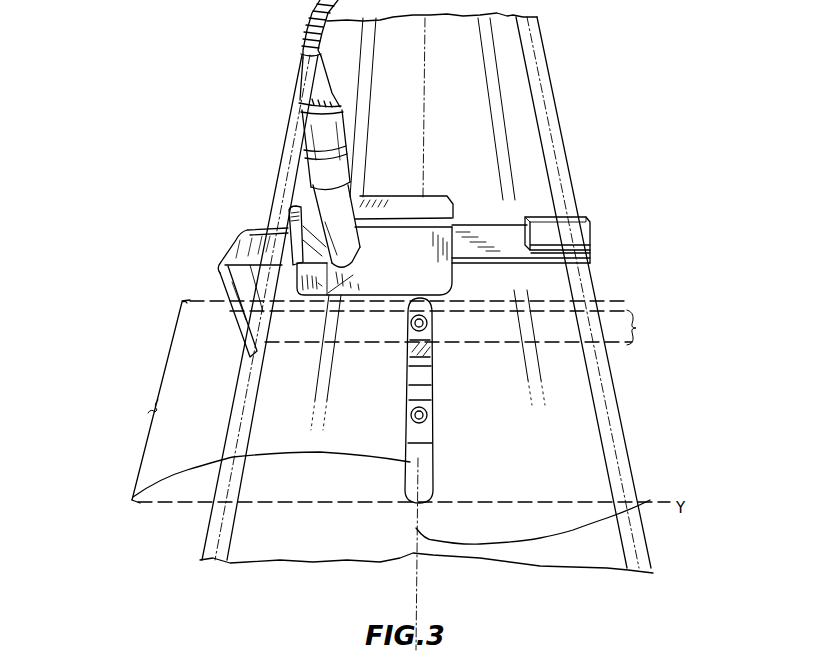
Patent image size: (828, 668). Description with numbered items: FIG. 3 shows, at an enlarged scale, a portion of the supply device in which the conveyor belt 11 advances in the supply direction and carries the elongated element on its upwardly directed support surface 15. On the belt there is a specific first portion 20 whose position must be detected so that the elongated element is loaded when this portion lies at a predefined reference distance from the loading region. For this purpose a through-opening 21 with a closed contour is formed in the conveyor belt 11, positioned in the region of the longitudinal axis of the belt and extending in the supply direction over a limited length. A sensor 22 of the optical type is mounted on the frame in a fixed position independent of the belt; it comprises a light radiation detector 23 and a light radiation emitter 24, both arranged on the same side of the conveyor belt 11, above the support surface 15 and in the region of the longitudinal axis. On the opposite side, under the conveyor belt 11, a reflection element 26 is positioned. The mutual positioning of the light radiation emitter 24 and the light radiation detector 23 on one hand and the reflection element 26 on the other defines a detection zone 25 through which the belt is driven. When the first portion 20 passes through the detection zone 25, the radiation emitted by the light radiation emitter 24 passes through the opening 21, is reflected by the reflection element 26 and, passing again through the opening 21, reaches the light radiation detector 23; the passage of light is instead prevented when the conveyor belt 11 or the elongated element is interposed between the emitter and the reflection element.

The conveyor belt 11 is at (508, 130).
The support surface 15 is at (573, 443).
The first portion 20 is at (148, 451).
The through-opening 21 is at (132, 500).
The sensor 22 is at (462, 220).
The light radiation detector 23 is at (452, 283).
The light radiation emitter 24 is at (225, 308).
The detection zone 25 is at (636, 328).
The reflection element 26 is at (407, 357).